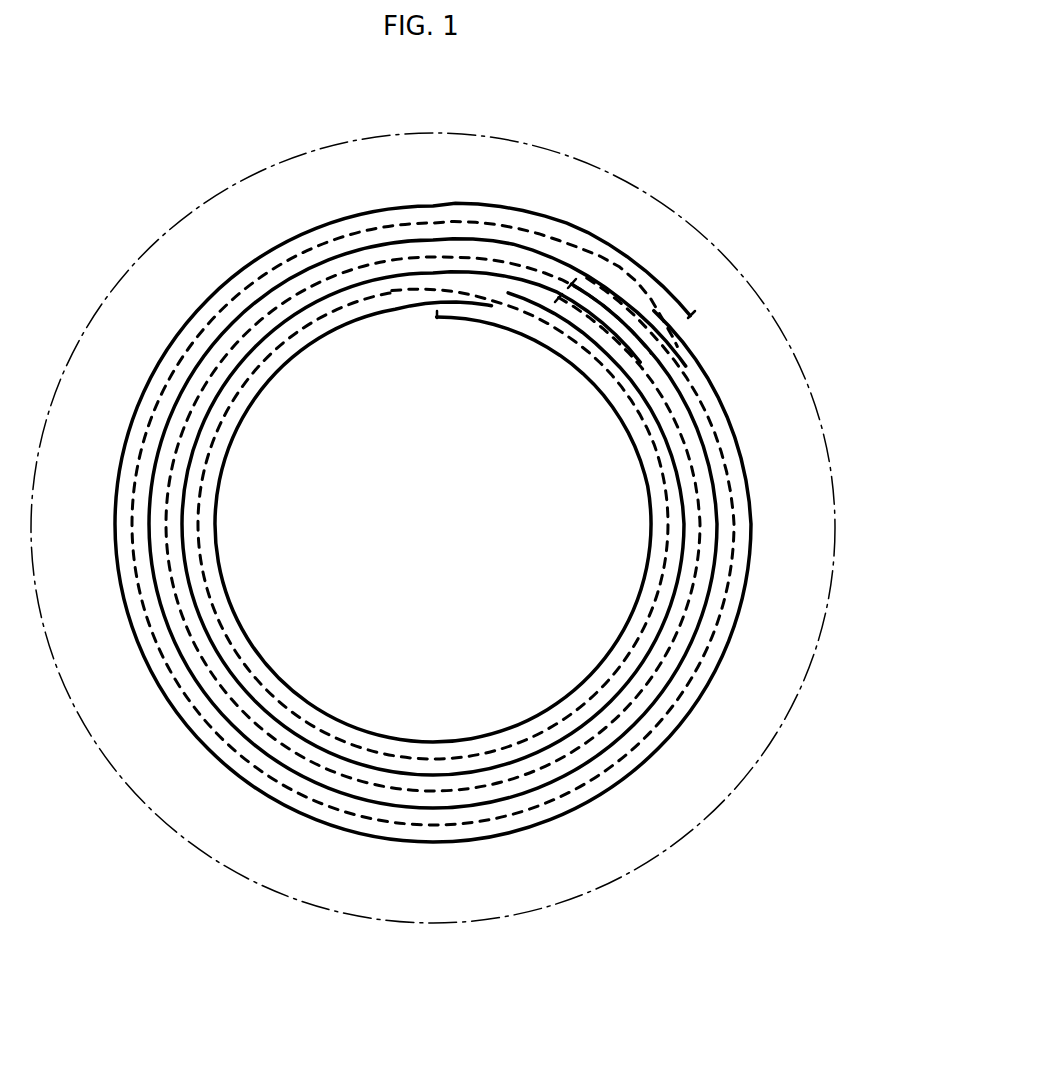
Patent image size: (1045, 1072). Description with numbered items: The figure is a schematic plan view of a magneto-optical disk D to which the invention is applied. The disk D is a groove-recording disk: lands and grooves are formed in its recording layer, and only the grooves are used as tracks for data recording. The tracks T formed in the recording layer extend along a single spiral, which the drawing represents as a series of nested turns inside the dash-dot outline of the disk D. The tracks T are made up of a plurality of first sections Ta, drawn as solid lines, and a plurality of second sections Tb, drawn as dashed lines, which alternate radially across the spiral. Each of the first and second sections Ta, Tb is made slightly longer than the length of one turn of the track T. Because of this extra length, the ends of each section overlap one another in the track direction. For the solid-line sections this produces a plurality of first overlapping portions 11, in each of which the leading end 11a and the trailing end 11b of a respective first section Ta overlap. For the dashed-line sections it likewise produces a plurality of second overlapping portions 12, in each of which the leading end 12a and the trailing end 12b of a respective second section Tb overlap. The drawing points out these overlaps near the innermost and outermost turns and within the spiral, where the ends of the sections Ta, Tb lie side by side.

The tracks T is at (508, 210).
The magneto-optical disk D is at (650, 190).
The first sections Ta is at (630, 447).
The second sections Tb is at (662, 517).
The first overlapping portions 11 is at (455, 318).
The leading end 11a is at (437, 318).
The trailing end 11b is at (485, 300).
The second overlapping portions 12 is at (560, 279).
The leading end 12a is at (557, 302).
The trailing end 12b is at (576, 283).